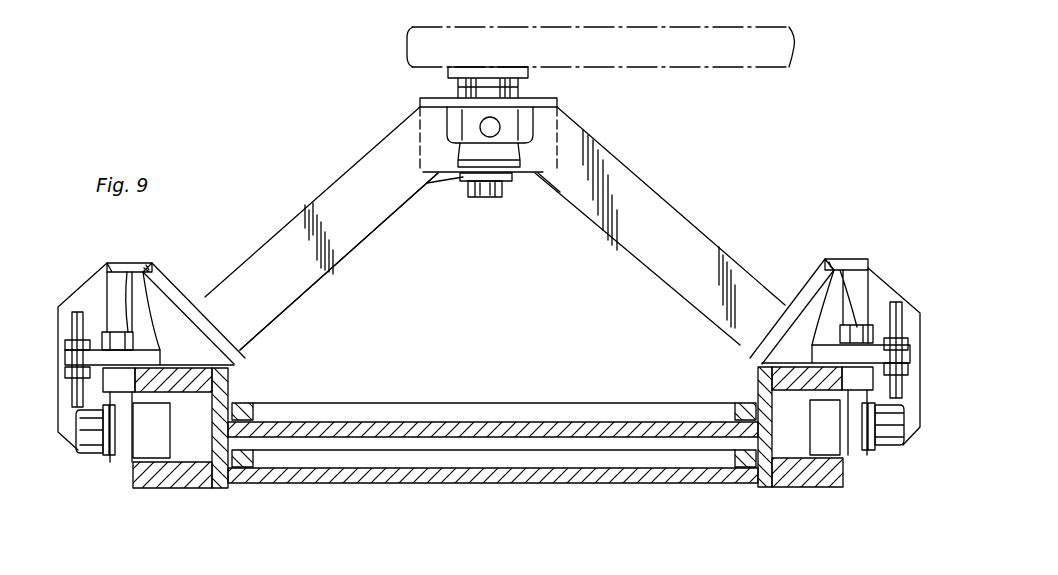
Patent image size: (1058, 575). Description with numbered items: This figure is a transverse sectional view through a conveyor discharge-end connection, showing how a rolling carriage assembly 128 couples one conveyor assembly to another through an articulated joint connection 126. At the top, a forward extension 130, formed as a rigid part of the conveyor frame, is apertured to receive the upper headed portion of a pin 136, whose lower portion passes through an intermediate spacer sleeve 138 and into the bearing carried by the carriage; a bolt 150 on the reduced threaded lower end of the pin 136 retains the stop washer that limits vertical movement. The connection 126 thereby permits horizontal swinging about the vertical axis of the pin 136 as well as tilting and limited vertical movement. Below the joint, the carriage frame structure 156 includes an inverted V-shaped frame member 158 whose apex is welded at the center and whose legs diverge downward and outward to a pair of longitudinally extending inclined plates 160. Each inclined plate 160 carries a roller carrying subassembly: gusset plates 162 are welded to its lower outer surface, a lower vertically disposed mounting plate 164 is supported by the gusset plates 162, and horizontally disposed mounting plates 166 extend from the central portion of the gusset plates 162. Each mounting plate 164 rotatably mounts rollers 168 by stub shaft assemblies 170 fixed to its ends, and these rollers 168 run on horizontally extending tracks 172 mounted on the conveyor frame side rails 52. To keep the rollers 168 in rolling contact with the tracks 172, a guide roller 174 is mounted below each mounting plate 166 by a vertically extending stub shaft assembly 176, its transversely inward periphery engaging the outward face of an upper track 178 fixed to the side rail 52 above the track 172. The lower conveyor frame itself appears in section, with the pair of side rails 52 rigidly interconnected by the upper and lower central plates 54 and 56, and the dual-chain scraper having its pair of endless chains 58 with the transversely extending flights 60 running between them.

The forward extension 130 is at (664, 61).
The articulated joint connection 126 is at (413, 93).
The intermediate spacer sleeve 138 is at (522, 93).
The bolt 150 is at (430, 177).
The pin 136 is at (484, 188).
The rolling carriage assembly 128 is at (262, 228).
The inverted V-shaped frame member 158 is at (327, 268).
The frame structure 156 is at (712, 243).
The vertically extending stub shaft assembly 176 is at (116, 266).
The inclined plate 160 is at (208, 318).
The horizontally disposed mounting plate 166 is at (150, 328).
The track 178 is at (242, 362).
The gusset plate 162 is at (110, 276).
The guide roller 174 is at (118, 382).
The side rail 52 is at (230, 392).
The rail or track 172 is at (208, 482).
The roller 168 is at (157, 432).
The lower vertically disposed mounting plate 164 is at (112, 462).
The stub shaft assembly 170 is at (79, 442).
The upper central plate 54 is at (364, 430).
The lower central plate 56 is at (375, 480).
The flight 60 is at (556, 404).
The endless chain 58 is at (255, 406).